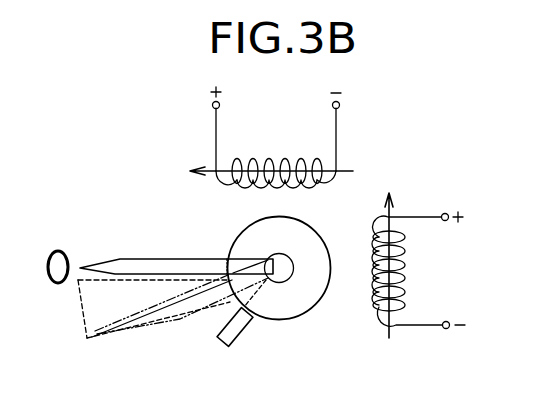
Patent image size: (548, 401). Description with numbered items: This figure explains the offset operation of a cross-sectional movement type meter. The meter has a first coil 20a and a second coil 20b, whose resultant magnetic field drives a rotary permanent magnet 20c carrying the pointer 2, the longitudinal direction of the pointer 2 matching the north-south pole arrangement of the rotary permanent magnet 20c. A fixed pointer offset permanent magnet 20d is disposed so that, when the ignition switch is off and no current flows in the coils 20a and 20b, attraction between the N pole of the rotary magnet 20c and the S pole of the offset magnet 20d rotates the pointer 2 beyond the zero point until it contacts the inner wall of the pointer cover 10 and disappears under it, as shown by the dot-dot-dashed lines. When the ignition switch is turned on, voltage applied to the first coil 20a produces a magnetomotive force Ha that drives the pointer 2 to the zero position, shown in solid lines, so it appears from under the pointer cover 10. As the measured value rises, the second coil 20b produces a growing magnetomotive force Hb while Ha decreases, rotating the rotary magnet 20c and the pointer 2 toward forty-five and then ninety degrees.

The pointer 2 is at (137, 259).
The pointer cover 10 is at (84, 309).
The first coil 20a is at (338, 176).
The second coil 20b is at (400, 223).
The rotary permanent magnet 20c is at (308, 303).
The pointer offset permanent magnet 20d is at (247, 334).
The magnetomotive force Ha is at (213, 168).
The magnetomotive force Hb is at (385, 210).